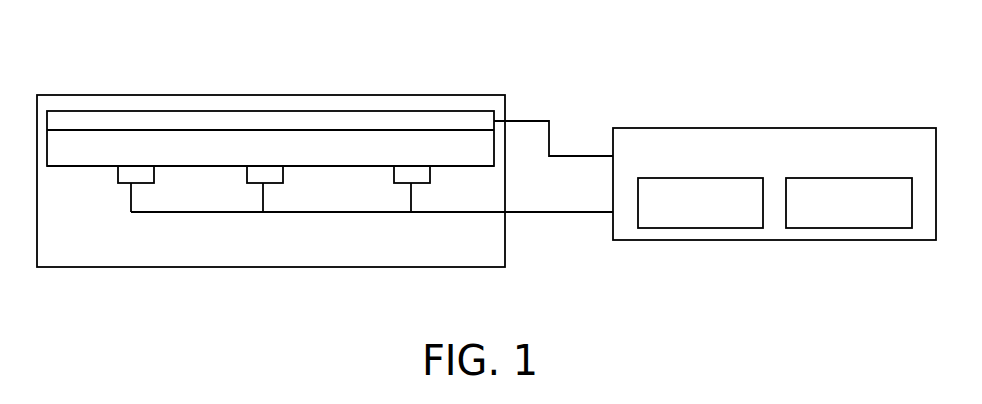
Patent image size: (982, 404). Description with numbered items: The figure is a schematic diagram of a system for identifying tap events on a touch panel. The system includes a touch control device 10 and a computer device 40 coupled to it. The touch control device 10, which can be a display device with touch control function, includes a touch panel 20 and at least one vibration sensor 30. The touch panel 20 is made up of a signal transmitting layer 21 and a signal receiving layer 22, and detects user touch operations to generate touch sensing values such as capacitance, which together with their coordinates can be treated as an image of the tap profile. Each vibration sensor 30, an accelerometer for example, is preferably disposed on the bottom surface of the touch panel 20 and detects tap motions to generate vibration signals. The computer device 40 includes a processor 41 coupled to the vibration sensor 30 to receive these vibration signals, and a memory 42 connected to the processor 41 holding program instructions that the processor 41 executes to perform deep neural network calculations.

The touch control device 10 is at (279, 94).
The touch panel 20 is at (270, 91).
The signal transmitting (Tx) layer 21 is at (137, 63).
The signal receiving (Rx) layer 22 is at (155, 120).
The vibration sensor 30 is at (406, 173).
The computer device 40 is at (774, 207).
The processor 41 is at (697, 228).
The memory 42 is at (865, 228).